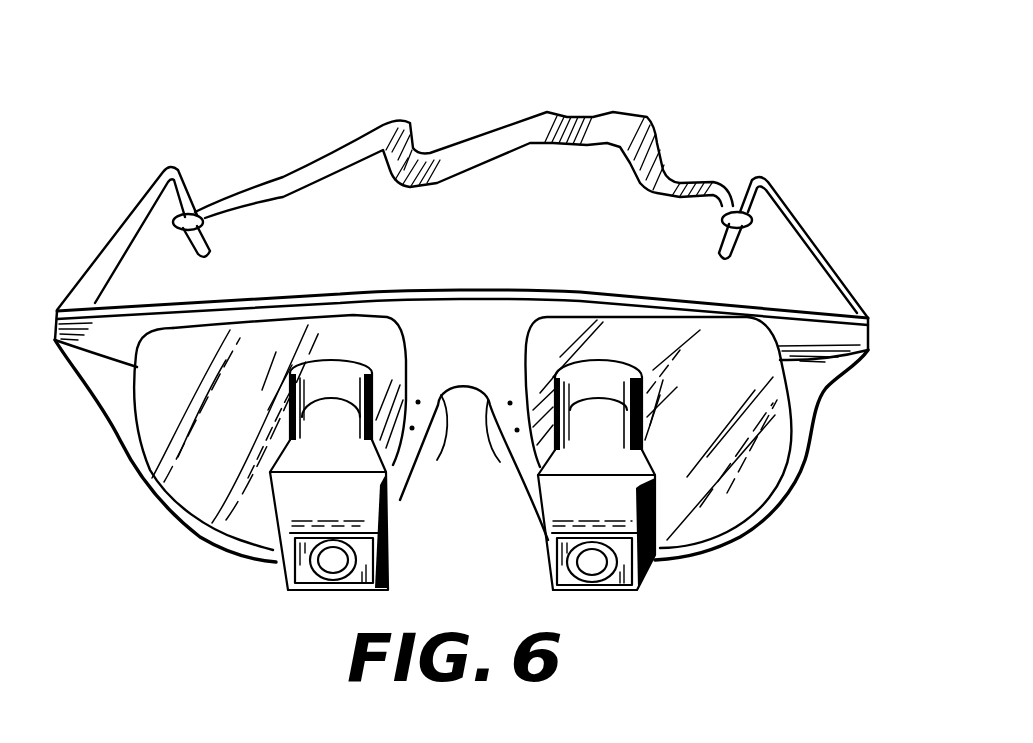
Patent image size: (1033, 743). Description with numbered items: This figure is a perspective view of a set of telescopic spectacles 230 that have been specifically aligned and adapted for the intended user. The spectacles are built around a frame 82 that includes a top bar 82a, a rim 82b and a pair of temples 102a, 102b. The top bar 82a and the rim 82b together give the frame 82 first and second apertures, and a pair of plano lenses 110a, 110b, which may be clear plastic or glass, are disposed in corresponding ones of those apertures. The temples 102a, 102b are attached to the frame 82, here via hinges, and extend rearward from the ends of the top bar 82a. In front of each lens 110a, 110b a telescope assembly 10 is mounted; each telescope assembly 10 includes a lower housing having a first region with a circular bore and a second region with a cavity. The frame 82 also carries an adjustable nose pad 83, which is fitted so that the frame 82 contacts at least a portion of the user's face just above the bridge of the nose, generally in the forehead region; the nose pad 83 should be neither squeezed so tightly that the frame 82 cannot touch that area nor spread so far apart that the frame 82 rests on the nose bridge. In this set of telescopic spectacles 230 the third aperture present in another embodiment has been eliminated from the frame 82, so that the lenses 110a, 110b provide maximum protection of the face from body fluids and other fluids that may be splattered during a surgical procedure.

The telescope assembly 10 is at (278, 562).
The frame 82 is at (460, 285).
The top bar 82a is at (637, 298).
The rim 82b is at (733, 515).
The adjustable nose pad 83 is at (467, 428).
The temple 102a is at (817, 250).
The temple 102b is at (121, 231).
The plano lens 110a is at (773, 423).
The plano lens 110b is at (168, 416).
The telescopic spectacles 230 is at (713, 84).